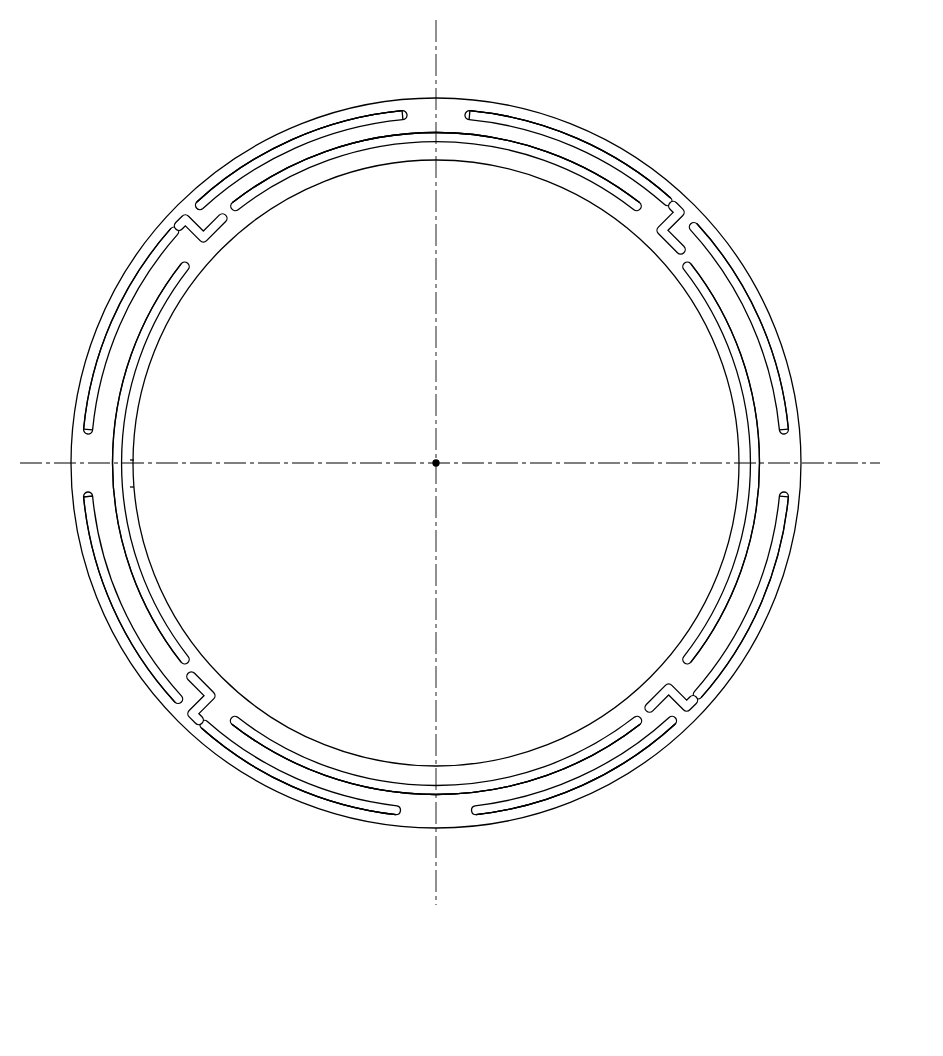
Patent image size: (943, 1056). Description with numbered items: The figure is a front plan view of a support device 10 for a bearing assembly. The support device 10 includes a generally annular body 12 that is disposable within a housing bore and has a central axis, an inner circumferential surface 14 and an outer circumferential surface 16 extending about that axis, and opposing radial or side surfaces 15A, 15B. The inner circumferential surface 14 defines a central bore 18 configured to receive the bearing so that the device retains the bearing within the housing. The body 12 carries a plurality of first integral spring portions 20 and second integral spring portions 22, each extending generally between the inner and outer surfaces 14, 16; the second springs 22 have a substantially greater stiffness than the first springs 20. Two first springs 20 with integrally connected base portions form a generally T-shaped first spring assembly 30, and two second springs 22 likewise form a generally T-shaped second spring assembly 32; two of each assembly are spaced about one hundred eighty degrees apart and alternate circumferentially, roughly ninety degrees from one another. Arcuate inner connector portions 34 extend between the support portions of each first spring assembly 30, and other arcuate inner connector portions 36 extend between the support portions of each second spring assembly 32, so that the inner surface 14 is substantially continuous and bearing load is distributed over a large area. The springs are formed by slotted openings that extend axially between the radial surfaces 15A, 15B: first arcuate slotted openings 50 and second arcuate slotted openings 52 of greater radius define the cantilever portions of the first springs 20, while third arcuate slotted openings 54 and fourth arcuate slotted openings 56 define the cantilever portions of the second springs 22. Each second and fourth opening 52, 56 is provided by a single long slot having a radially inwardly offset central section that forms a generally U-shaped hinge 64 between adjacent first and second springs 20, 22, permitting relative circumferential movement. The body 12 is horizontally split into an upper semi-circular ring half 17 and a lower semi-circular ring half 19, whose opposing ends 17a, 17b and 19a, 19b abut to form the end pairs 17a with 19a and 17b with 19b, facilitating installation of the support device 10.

The support device 10 is at (150, 55).
The annular body 12 is at (175, 188).
The inner circumferential surface 14 is at (575, 205).
The radial surface 15A is at (415, 108).
The radial surface 15B is at (455, 108).
The outer circumferential surface 16 is at (638, 150).
The upper semi-circular ring half 17 is at (80, 458).
The ring half end 17a is at (130, 465).
The ring half end 17b is at (805, 446).
The central bore 18 is at (665, 320).
The lower semi-circular ring half 19 is at (85, 480).
The ring half end 19a is at (130, 488).
The ring half end 19b is at (805, 476).
The first integral spring portion 20 is at (305, 155).
The second integral spring portion 22 is at (110, 385).
The first spring assembly 30 is at (460, 185).
The second spring assembly 32 is at (298, 603).
The inner connector portion 34 is at (160, 604).
The inner connector portion 36 is at (305, 195).
The first arcuate slotted opening 50 is at (375, 142).
The second arcuate slotted opening 52 is at (345, 125).
The third arcuate slotted opening 54 is at (140, 348).
The fourth arcuate slotted opening 56 is at (115, 322).
The U-shaped hinge 64 is at (225, 225).